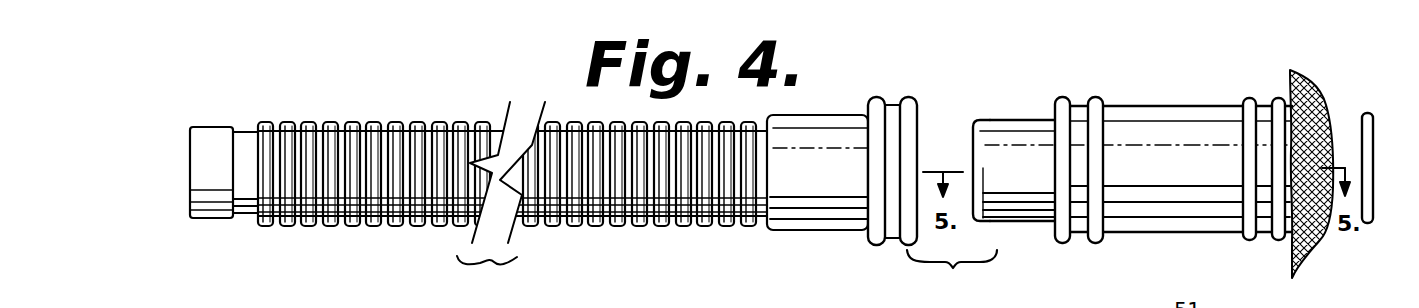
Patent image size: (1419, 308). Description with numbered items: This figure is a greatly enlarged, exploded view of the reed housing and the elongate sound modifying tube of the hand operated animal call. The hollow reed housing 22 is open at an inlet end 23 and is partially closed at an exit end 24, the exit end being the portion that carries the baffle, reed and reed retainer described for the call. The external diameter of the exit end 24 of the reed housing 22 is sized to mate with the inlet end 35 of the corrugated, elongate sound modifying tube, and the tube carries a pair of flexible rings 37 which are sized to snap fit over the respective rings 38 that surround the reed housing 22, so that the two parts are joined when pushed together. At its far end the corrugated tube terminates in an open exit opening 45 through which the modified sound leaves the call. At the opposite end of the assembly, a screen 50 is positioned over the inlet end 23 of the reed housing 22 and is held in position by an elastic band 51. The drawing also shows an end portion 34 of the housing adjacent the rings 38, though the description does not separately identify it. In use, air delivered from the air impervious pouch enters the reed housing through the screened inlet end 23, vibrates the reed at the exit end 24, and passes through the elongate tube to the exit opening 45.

The reed housing 22 is at (1160, 106).
The inlet end 23 is at (1292, 88).
The exit end 24 is at (976, 126).
The sleeve section 34 is at (1017, 118).
The inlet end 35 is at (918, 108).
The flexible rings 37 is at (907, 97).
The rings 38 is at (1096, 97).
The exit opening 45 is at (190, 203).
The screen 50 is at (1307, 261).
The elastic band 51 is at (1370, 113).